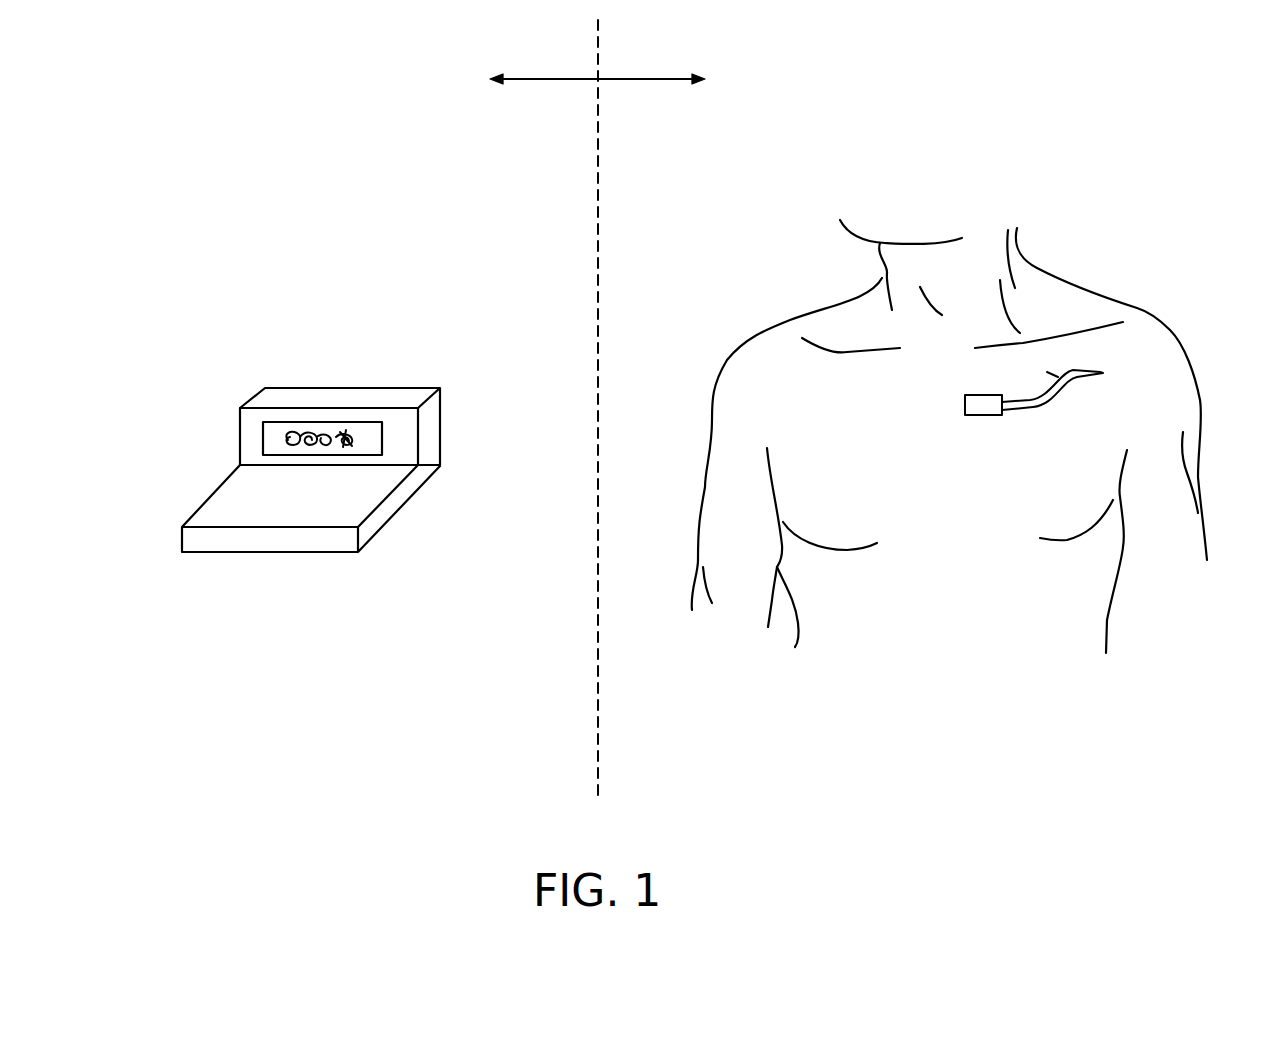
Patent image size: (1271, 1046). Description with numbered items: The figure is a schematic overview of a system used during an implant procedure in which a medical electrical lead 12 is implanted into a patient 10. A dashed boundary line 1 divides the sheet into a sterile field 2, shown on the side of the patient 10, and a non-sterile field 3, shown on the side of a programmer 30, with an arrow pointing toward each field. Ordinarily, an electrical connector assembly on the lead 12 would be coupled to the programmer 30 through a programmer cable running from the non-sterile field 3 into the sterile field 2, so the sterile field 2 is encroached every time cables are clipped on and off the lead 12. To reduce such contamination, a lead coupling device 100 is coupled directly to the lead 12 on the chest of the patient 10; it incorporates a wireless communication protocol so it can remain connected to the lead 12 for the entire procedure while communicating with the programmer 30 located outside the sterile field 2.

The boundary line 1 is at (607, 831).
The sterile field 2 is at (617, 80).
The non-sterile field 3 is at (488, 80).
The patient 10 is at (1138, 309).
The medical electrical lead 12 is at (1035, 395).
The programmer 30 is at (390, 364).
The lead coupling device 100 is at (990, 417).